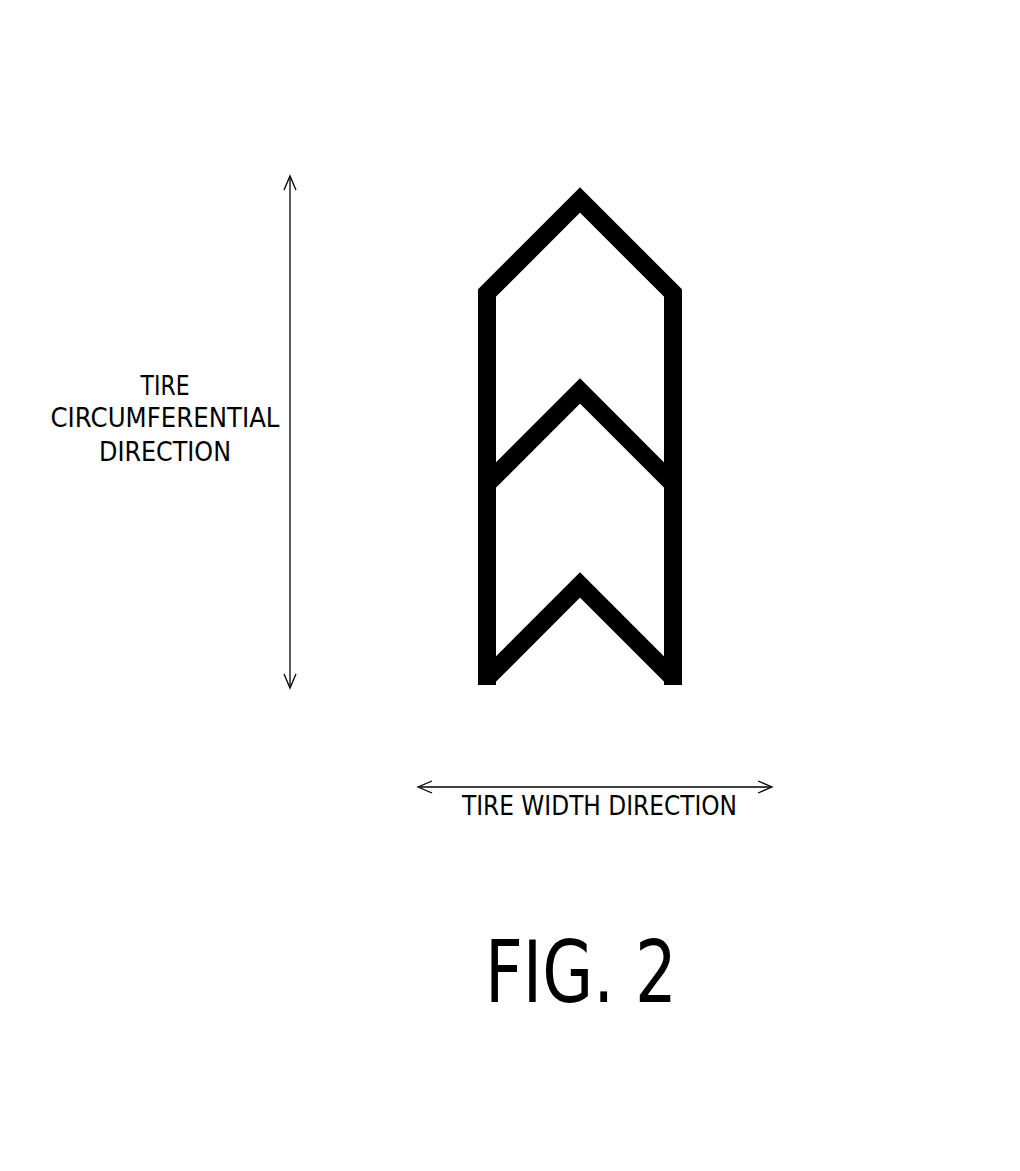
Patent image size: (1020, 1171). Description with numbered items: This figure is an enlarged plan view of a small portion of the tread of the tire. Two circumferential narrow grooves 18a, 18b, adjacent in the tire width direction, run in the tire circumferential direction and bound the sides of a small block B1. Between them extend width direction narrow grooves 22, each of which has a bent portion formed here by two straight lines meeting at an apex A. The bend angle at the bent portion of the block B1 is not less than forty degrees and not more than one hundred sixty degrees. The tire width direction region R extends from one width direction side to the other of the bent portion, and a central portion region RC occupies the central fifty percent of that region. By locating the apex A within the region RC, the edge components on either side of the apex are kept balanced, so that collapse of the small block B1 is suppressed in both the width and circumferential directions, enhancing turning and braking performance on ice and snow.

The width direction narrow groove 22 is at (592, 225).
The circumferential narrow groove 18a is at (478, 617).
The circumferential narrow groove 18b is at (682, 548).
The small block B1 is at (528, 338).
The apex of the bent portion A is at (580, 186).
The tire width direction region R is at (495, 265).
The central portion region RC is at (623, 265).